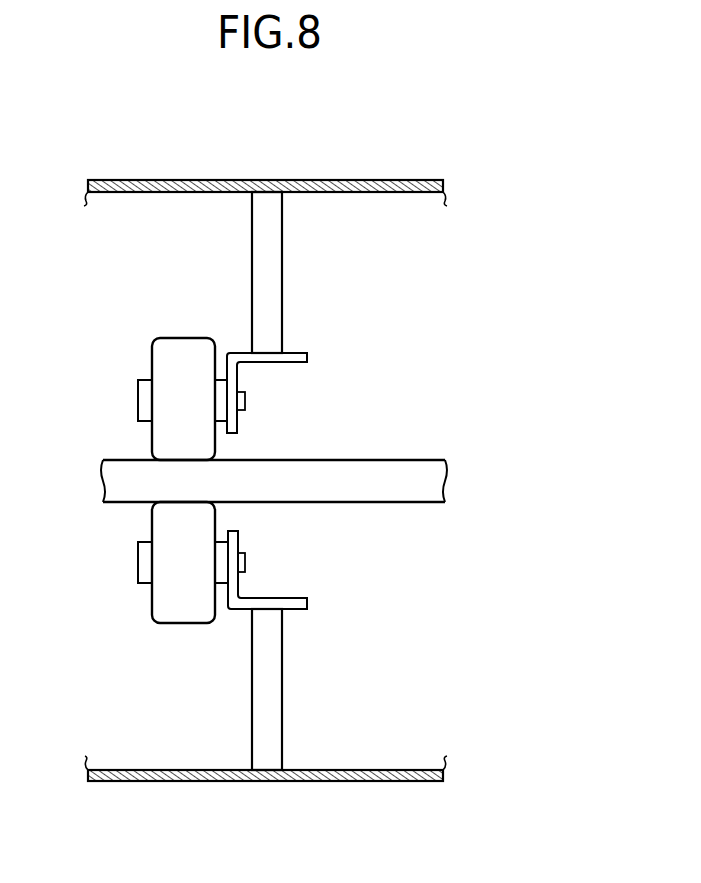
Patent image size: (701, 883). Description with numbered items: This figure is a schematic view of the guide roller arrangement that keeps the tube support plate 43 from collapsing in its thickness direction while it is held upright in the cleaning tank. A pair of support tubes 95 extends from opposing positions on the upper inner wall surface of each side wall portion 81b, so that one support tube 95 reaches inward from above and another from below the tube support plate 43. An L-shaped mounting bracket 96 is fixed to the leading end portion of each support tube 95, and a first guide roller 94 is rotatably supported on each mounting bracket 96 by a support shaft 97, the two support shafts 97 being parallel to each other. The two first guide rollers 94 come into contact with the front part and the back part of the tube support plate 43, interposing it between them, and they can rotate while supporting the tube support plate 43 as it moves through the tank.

The side wall portion 81b is at (368, 180).
The support tube 95 is at (273, 258).
The L-shaped mounting bracket 96 is at (283, 360).
The first guide roller 94 is at (160, 362).
The support shaft 97 is at (145, 400).
The tube support plate 43 is at (405, 472).